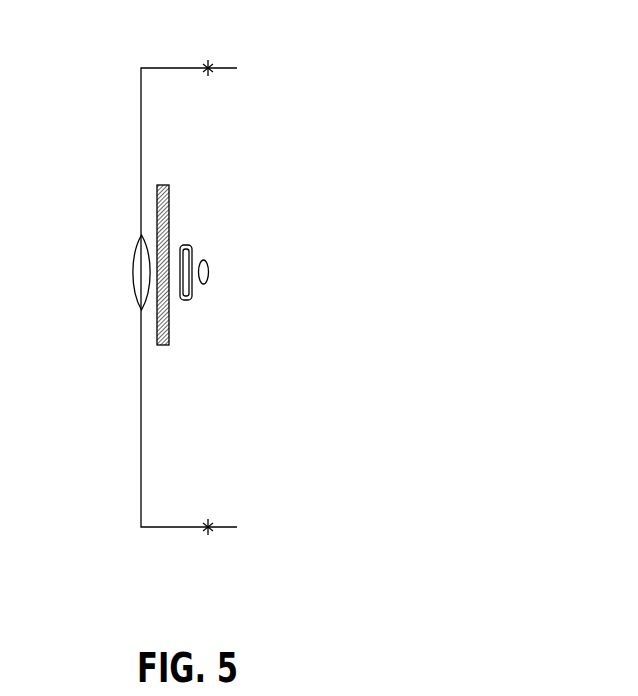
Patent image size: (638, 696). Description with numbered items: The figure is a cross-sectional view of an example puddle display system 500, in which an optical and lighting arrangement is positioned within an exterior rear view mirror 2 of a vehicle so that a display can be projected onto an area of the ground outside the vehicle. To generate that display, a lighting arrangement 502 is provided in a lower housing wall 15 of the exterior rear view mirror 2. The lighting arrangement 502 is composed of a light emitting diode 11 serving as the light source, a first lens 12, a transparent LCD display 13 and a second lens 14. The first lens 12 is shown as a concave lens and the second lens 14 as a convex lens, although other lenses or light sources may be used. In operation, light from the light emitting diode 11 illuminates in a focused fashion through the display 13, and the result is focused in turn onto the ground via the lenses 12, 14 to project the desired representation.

The exterior rear view mirror 2 is at (183, 540).
The light emitting diode 11 is at (204, 284).
The first lens 12 is at (186, 300).
The transparent LCD display 13 is at (163, 347).
The second lens 14 is at (136, 300).
The lower housing wall 15 is at (141, 425).
The puddle display system 500 is at (527, 62).
The lighting arrangement 502 is at (200, 344).